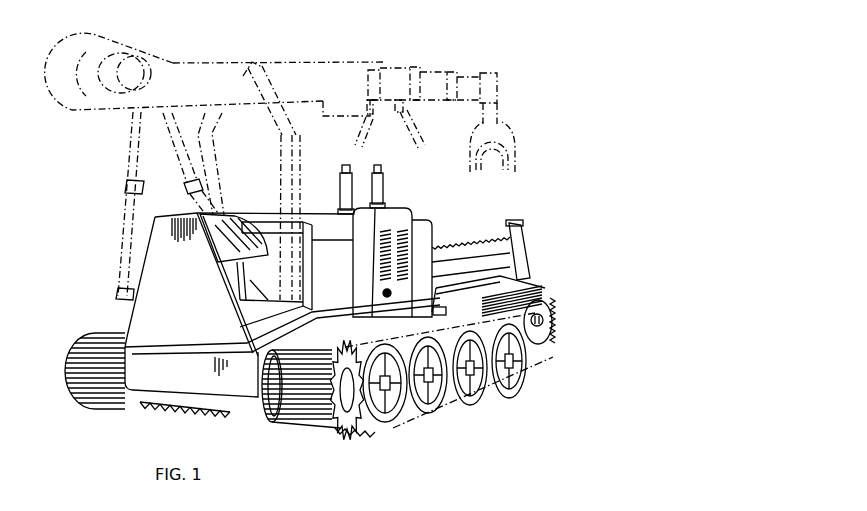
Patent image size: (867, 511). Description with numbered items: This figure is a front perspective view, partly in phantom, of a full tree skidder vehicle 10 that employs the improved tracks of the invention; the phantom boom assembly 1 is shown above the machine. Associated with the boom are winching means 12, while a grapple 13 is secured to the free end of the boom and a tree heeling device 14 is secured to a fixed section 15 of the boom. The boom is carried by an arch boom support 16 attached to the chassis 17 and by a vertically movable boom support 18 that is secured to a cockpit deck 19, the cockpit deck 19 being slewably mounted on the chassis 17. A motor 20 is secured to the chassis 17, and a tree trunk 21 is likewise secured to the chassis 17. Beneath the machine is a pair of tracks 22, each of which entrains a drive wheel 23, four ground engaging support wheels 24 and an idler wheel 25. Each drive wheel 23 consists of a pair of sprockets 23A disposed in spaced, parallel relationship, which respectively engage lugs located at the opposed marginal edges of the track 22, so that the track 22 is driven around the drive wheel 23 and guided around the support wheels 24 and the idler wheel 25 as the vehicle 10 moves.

The crane boom assembly 1 is at (288, 61).
The vehicle 10 is at (243, 410).
The winching means 12 is at (117, 58).
The grapple 13 is at (507, 114).
The tree heeling device 14 is at (418, 140).
The fixed section of the boom 15 is at (326, 106).
The arch boom support 16 is at (295, 177).
The chassis 17 is at (312, 314).
The vertically movable boom support 18 is at (126, 204).
The cockpit deck 19 is at (163, 334).
The motor 20 is at (392, 219).
The tree trunk 21 is at (457, 258).
The track 22 is at (100, 412).
The drive wheel 23 is at (357, 427).
The sprockets 23A is at (143, 410).
The ground engaging support wheels 24 is at (388, 416).
The idler wheel 25 is at (541, 333).